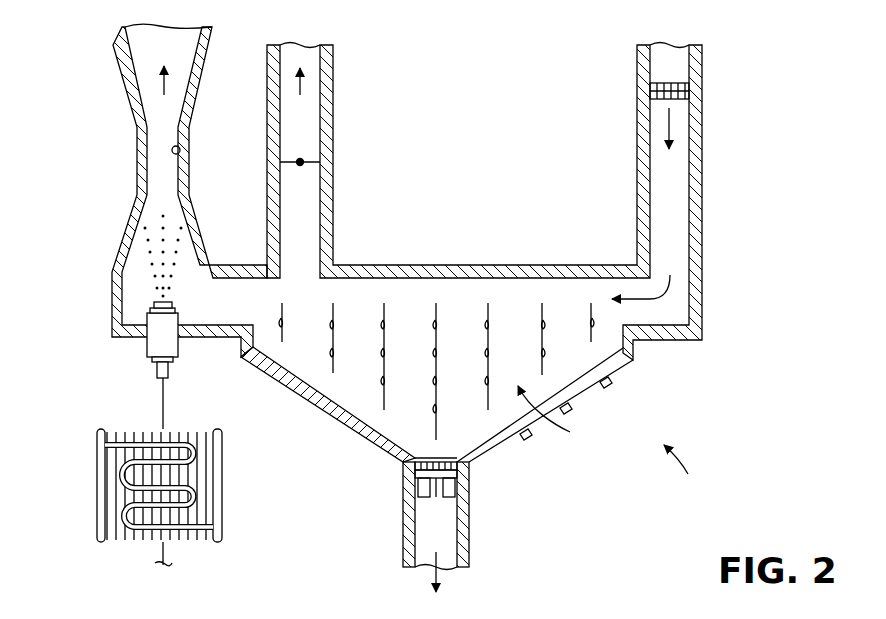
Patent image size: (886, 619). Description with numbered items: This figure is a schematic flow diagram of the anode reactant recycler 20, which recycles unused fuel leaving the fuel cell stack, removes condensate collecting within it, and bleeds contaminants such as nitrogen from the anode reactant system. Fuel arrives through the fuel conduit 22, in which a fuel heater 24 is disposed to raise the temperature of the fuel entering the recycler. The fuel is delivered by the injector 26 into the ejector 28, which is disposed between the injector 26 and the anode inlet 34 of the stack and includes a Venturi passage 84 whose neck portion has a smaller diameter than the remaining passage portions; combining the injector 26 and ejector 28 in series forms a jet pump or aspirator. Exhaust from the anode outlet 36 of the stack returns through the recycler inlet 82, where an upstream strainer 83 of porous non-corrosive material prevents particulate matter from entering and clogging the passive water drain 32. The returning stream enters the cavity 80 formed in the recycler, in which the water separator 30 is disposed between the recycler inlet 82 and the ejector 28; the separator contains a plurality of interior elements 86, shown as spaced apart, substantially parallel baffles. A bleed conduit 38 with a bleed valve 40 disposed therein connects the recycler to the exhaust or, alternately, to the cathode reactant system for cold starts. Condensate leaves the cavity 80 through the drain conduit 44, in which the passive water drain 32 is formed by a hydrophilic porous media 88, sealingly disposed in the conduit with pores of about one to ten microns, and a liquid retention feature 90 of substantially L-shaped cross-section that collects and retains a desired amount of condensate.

The anode reactant recycler 20 is at (686, 471).
The fuel conduit 22 is at (162, 400).
The fuel heater 24 is at (98, 486).
The injector 26 is at (147, 355).
The ejector 28 is at (95, 45).
The water separator 30 is at (423, 439).
The passive water drain 32 is at (490, 458).
The anode inlet 34 is at (113, 44).
The anode outlet 36 is at (702, 56).
The bleed conduit 38 is at (333, 108).
The bleed valve 40 is at (322, 162).
The drain conduit 44 is at (469, 544).
The cavity 80 is at (560, 415).
The recycler inlet 82 is at (702, 188).
The upstream strainer 83 is at (689, 92).
The Venturi passage 84 is at (180, 148).
The interior elements 86 is at (494, 303).
The hydrophilic porous media 88 is at (415, 466).
The liquid retention feature 90 is at (415, 505).